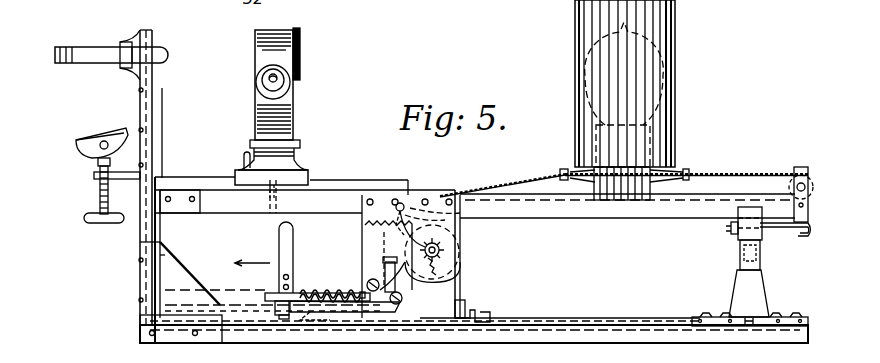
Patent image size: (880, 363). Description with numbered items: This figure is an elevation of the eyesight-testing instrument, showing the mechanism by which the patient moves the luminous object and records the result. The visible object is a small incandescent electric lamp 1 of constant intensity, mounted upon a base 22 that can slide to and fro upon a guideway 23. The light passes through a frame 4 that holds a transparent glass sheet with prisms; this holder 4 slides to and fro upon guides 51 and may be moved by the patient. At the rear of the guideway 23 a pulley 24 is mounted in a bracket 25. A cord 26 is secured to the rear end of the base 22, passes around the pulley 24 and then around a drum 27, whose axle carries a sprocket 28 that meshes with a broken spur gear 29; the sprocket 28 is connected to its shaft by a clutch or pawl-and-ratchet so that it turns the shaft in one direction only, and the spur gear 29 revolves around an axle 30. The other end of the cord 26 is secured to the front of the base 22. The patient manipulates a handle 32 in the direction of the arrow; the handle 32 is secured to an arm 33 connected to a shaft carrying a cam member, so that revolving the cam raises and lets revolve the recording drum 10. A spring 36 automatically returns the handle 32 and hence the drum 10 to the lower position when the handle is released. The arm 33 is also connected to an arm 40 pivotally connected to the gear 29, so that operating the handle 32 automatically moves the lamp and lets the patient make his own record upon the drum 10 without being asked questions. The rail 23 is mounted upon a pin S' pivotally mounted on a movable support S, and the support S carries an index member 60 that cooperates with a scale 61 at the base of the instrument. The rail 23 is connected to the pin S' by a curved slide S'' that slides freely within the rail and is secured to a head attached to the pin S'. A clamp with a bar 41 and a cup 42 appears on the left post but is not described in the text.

The electric lamp 1 is at (647, 73).
The frame 4 is at (288, 116).
The drum 10 is at (195, 262).
The base 22 is at (612, 205).
The guideway 23 is at (670, 219).
The pulley 24 is at (809, 200).
The bracket 25 is at (803, 168).
The cord 26 is at (497, 182).
The drum 27 is at (443, 257).
The sprocket 28 is at (443, 243).
The broken spur gear 29 is at (437, 267).
The axle 30 is at (378, 290).
The handle 32 is at (280, 242).
The arm 33 is at (328, 4).
The spring 36 is at (329, 289).
The arm 40 is at (368, 304).
The clamp bar 41 is at (89, 57).
The clamp cup 42 is at (90, 147).
The guides 51 is at (188, 178).
The index member 60 is at (759, 329).
The scale 61 is at (763, 8).
The movable support S is at (750, 298).
The pin S' is at (760, 238).
The curved slide S'' is at (776, 239).